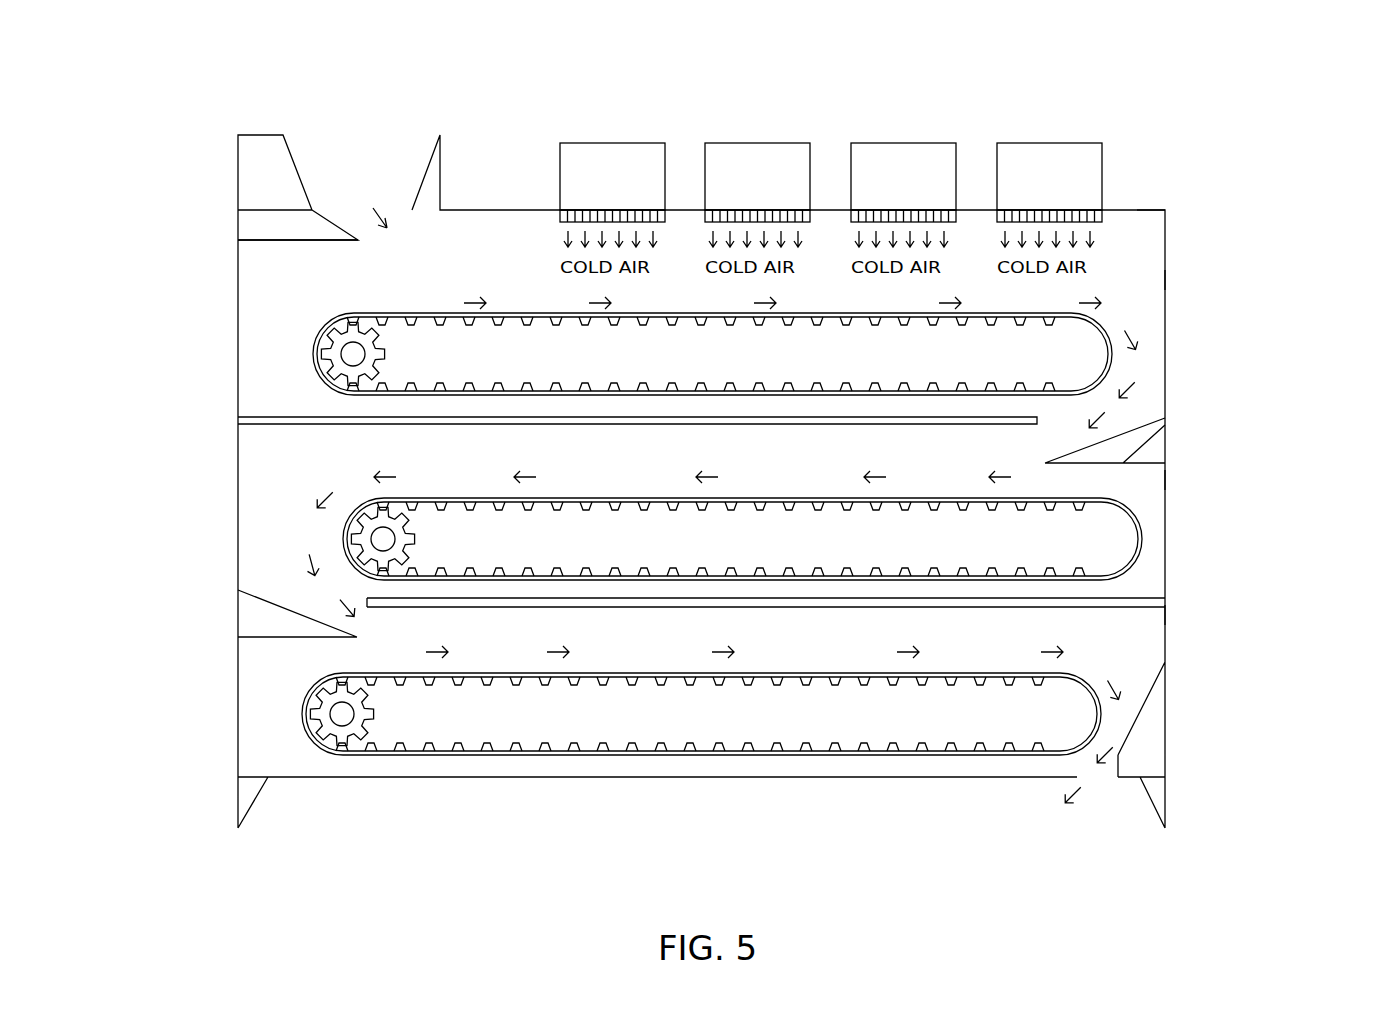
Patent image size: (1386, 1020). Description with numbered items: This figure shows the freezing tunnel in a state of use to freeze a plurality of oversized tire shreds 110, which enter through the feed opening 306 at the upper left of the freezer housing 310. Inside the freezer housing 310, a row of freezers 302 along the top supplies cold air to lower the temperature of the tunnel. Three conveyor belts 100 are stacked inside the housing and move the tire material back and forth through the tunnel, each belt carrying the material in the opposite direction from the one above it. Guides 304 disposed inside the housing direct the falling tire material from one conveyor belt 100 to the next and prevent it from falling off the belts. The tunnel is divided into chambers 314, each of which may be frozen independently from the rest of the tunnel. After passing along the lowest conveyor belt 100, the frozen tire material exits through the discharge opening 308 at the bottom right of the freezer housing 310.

The conveyor belts 100 is at (323, 353).
The oversized tire shreds 110 is at (386, 127).
The freezers 302 is at (600, 143).
The guides 304 is at (278, 240).
The feed opening 306 is at (369, 171).
The discharge opening 308 is at (1108, 787).
The freezer housing 310 is at (1137, 210).
The chambers 314 is at (1180, 286).